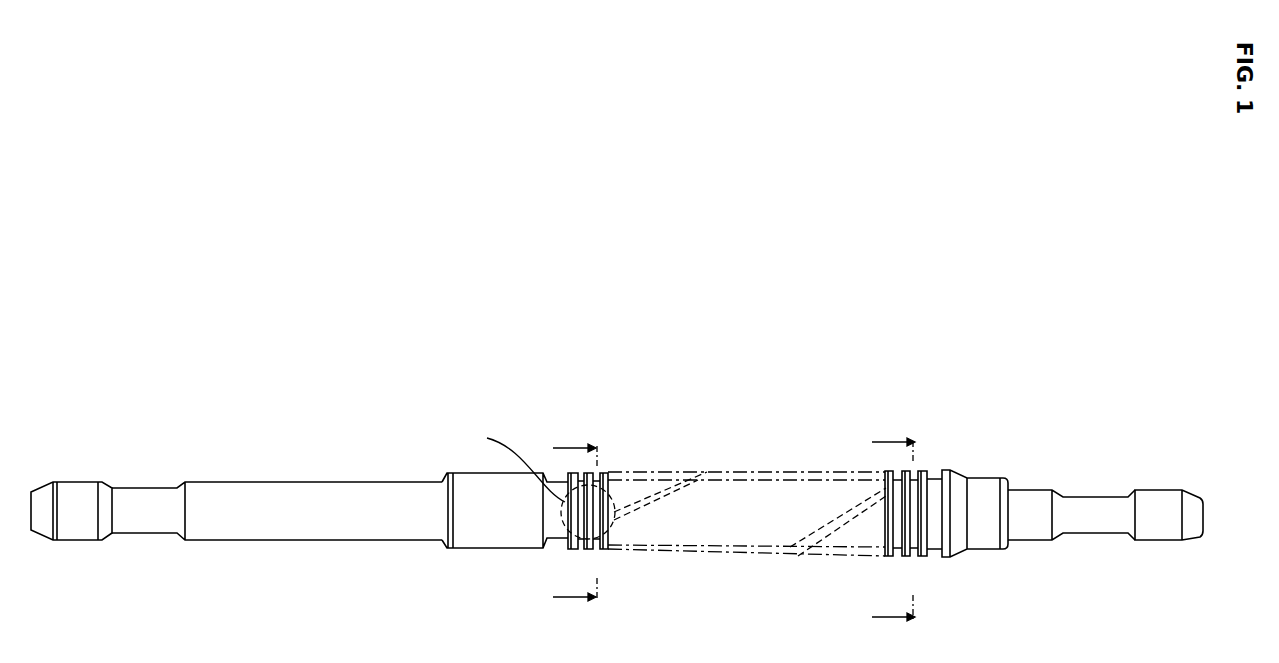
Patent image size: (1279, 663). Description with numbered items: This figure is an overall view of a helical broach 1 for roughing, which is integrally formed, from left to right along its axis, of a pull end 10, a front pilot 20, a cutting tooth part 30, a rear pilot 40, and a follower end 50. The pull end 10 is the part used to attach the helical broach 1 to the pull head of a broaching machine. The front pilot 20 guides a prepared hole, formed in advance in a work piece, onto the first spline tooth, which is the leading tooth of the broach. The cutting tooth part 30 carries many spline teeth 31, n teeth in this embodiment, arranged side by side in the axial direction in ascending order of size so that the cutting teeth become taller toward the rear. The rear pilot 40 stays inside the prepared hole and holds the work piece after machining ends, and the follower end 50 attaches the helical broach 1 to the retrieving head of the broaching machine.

The helical broach for roughing 1 is at (804, 366).
The pull end 10 is at (80, 541).
The front pilot 20 is at (468, 549).
The cutting tooth part 30 is at (913, 407).
The spline teeth 31 is at (568, 550).
The rear pilot 40 is at (988, 552).
The follower end 50 is at (1163, 542).